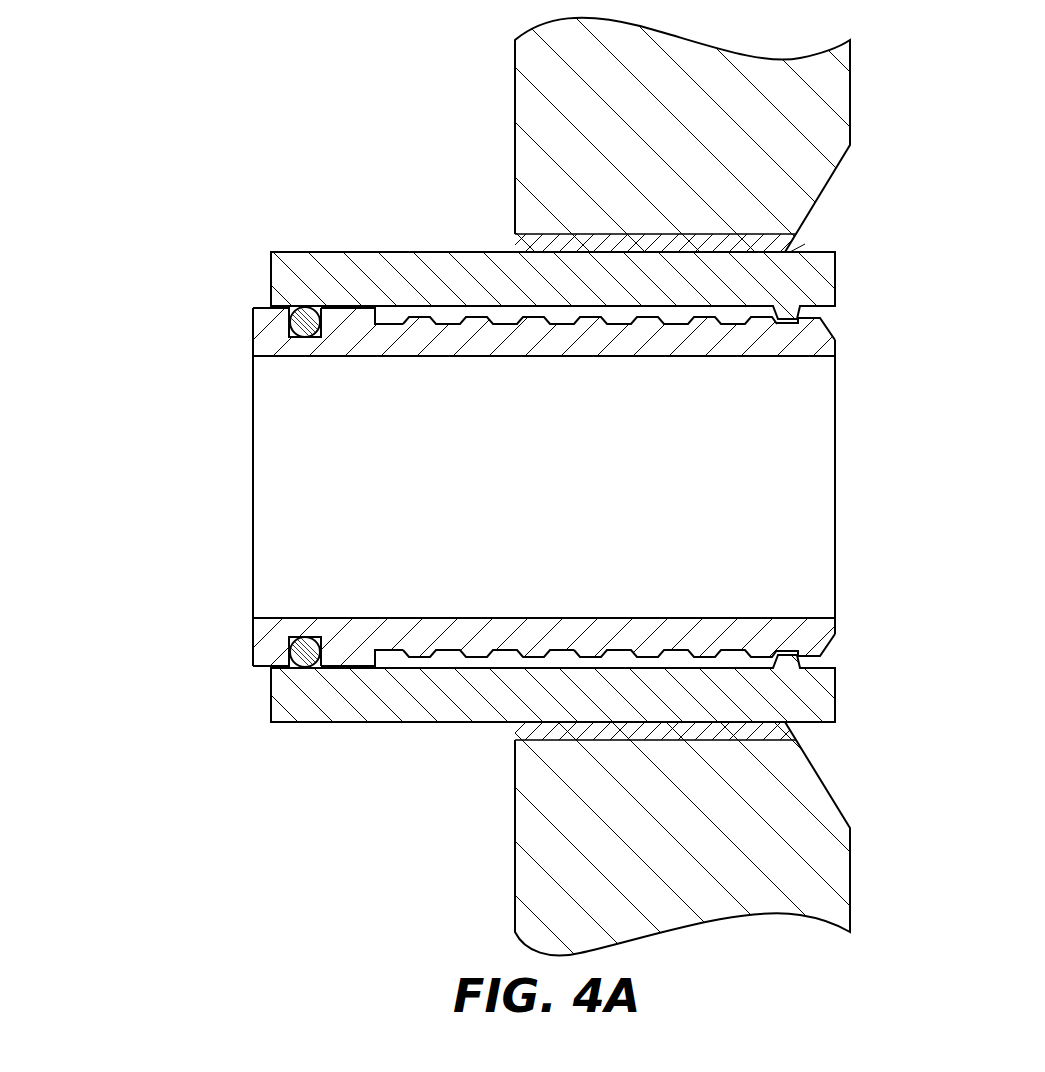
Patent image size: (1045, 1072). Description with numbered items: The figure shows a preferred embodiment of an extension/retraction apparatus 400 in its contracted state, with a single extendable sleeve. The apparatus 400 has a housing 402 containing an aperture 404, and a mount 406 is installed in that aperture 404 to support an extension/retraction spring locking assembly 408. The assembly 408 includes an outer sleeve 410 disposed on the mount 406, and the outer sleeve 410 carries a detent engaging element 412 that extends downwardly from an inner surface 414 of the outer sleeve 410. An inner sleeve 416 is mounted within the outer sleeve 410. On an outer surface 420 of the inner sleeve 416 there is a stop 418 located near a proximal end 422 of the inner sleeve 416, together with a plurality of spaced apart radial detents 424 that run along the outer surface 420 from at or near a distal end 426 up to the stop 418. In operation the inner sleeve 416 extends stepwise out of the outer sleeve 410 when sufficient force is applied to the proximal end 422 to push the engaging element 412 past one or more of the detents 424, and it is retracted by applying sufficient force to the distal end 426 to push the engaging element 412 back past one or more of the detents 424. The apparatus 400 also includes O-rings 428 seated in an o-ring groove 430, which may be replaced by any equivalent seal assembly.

The extension/retraction apparatus 400 is at (114, 501).
The housing 402 is at (694, 114).
The aperture 404 is at (814, 240).
The mount 406 is at (555, 240).
The extension/retraction spring locking assembly 408 is at (862, 478).
The outer sleeve 410 is at (389, 252).
The detent engaging element 412 is at (793, 307).
The inner surface 414 is at (678, 308).
The inner sleeve 416 is at (251, 479).
The stop 418 is at (352, 318).
The outer surface 420 is at (620, 650).
The proximal end 422 is at (254, 431).
The spaced apart radial detents 424 is at (533, 656).
The distal end 426 is at (835, 431).
The O-rings 428 is at (302, 307).
The o-ring groove 430 is at (305, 637).